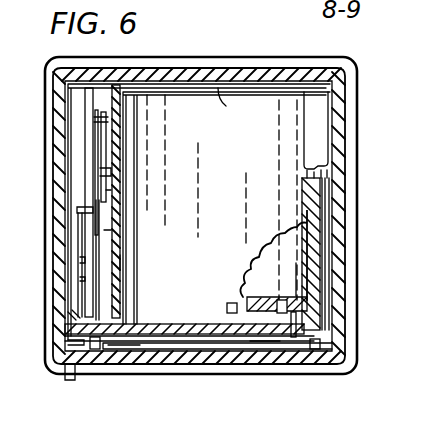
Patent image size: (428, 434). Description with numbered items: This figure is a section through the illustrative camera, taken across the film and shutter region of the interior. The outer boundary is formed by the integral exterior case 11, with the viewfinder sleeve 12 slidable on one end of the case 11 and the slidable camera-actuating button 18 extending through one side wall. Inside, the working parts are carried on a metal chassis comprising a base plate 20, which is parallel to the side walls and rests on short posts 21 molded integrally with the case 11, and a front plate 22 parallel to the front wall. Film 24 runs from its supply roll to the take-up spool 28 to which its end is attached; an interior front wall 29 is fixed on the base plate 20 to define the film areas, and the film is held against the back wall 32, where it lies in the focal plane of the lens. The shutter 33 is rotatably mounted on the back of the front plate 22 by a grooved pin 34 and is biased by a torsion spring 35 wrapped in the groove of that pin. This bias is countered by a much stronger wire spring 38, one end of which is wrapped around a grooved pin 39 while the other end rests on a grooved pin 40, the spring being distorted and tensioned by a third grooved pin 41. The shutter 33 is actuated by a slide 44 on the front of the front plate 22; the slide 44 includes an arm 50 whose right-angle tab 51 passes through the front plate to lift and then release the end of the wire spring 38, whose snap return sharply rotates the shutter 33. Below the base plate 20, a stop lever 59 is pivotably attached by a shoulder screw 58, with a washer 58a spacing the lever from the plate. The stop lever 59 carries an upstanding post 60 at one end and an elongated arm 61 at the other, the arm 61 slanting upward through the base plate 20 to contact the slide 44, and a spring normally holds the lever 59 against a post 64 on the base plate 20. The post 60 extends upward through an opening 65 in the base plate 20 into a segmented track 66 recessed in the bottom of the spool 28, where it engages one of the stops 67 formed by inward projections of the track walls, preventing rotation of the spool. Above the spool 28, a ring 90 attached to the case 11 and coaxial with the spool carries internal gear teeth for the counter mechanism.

The exterior case 11 is at (338, 152).
The viewfinder sleeve 12 is at (230, 64).
The camera-actuating button 18 is at (67, 378).
The base plate 20 is at (177, 330).
The short posts 21 is at (95, 350).
The front plate 22 is at (90, 99).
The film 24 is at (326, 222).
The take-up spool 28 is at (320, 254).
The interior front wall 29 is at (115, 262).
The back wall 32 is at (318, 131).
The shutter 33 is at (100, 143).
The grooved pin 34 is at (102, 234).
The torsion spring 35 is at (105, 152).
The wire spring 38 is at (105, 190).
The grooved pin 39 is at (97, 117).
The grooved pin 40 is at (103, 183).
The third grooved pin 41 is at (108, 172).
The slide 44 is at (88, 276).
The arm 50 is at (88, 239).
The right-angle tab 51 is at (88, 210).
The shoulder screw 58 is at (276, 347).
The washer 58a is at (247, 298).
The stop lever 59 is at (232, 345).
The upstanding post 60 is at (293, 322).
The elongated arm 61 is at (147, 341).
The post 64 is at (70, 310).
The opening 65 is at (290, 343).
The segmented track 66 is at (294, 291).
The stops 67 is at (273, 255).
The ring 90 is at (237, 108).